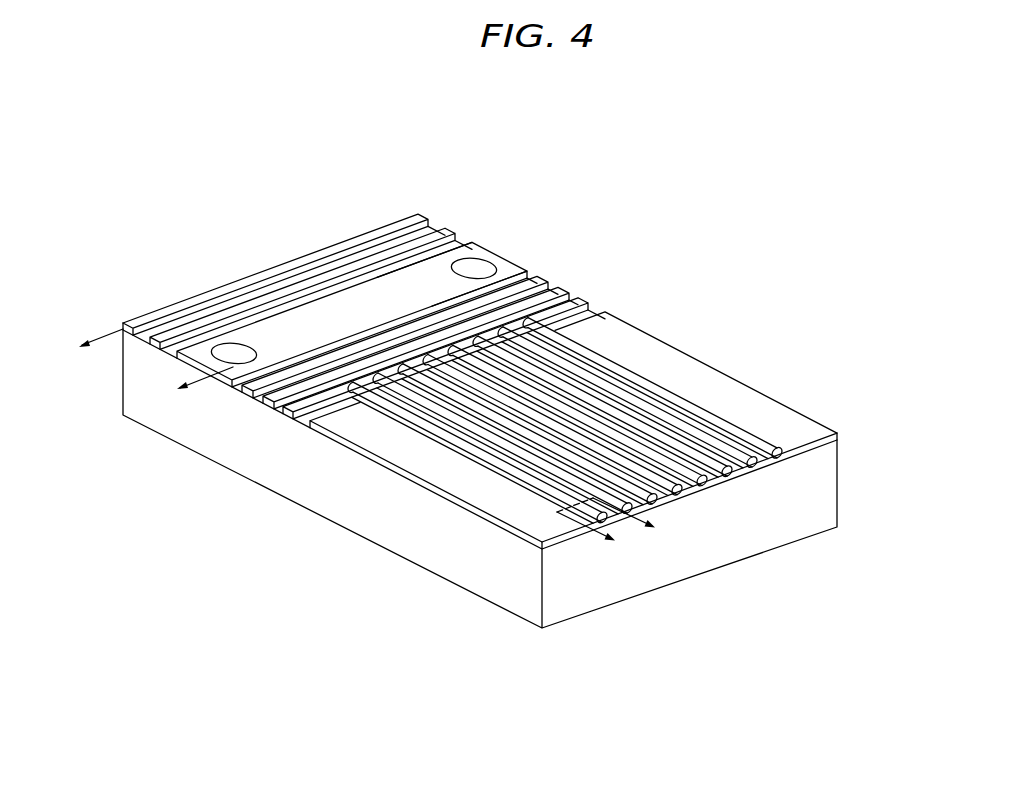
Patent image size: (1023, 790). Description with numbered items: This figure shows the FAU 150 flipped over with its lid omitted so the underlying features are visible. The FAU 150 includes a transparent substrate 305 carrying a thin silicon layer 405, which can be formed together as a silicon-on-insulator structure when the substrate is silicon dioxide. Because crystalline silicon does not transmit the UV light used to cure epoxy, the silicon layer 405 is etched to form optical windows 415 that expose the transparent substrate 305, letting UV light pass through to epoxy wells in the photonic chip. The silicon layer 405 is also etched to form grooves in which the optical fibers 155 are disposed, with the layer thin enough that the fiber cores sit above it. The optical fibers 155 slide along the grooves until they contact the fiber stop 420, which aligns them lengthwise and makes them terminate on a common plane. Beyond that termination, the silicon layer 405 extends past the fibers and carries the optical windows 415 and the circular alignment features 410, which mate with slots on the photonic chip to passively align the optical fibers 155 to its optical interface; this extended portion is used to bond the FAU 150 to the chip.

The fiber array unit (FAU) 150 is at (803, 156).
The optical fibers 155 is at (751, 452).
The transparent substrate 305 is at (712, 555).
The silicon layer 405 is at (848, 433).
The alignment features 410 is at (464, 266).
The optical windows 415 is at (547, 291).
The fiber stop 420 is at (290, 402).